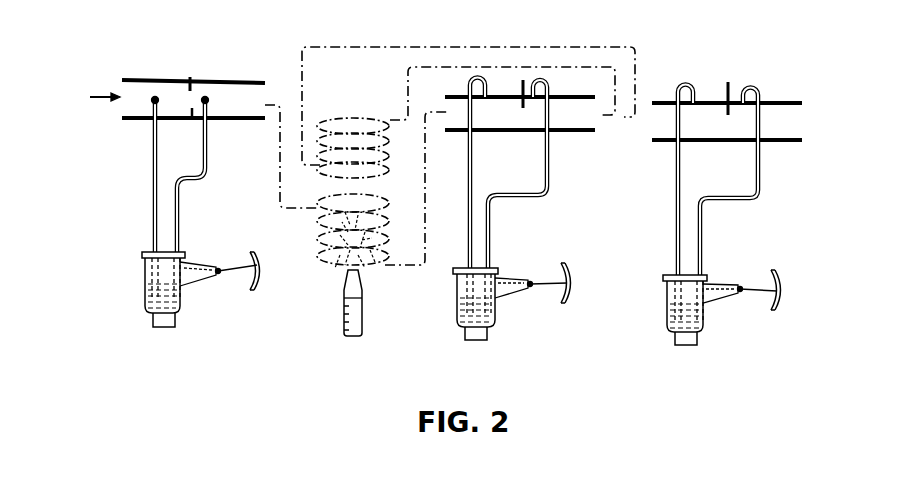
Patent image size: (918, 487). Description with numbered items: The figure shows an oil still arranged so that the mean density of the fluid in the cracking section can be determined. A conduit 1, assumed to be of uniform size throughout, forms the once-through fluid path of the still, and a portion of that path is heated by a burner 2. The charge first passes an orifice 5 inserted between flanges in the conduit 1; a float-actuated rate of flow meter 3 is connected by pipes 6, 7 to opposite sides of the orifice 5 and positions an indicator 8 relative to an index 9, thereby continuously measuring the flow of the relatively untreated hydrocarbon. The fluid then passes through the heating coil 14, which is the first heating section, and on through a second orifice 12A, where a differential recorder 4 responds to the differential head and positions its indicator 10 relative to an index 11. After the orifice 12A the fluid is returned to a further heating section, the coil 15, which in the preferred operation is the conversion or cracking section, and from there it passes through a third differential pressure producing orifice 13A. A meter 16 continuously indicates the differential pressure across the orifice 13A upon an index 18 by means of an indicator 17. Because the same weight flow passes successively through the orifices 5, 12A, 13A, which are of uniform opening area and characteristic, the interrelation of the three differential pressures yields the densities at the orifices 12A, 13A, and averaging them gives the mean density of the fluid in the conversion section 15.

The conduit 1 is at (140, 119).
The burner 2 is at (364, 306).
The rate of flow meter 3 is at (146, 278).
The differential recorder 4 is at (457, 300).
The orifice 5 is at (190, 77).
The pipe 6 is at (152, 189).
The pipe 7 is at (180, 184).
The indicator 8 is at (244, 265).
The index 9 is at (251, 289).
The indicator 10 is at (550, 282).
The index 11 is at (561, 300).
The orifice 12A is at (523, 88).
The third differential pressure producing orifice 13A is at (728, 82).
The heating coil 14 is at (365, 231).
The coil 15 is at (367, 148).
The meter 16 is at (667, 306).
The indicator 17 is at (758, 288).
The index 18 is at (772, 305).